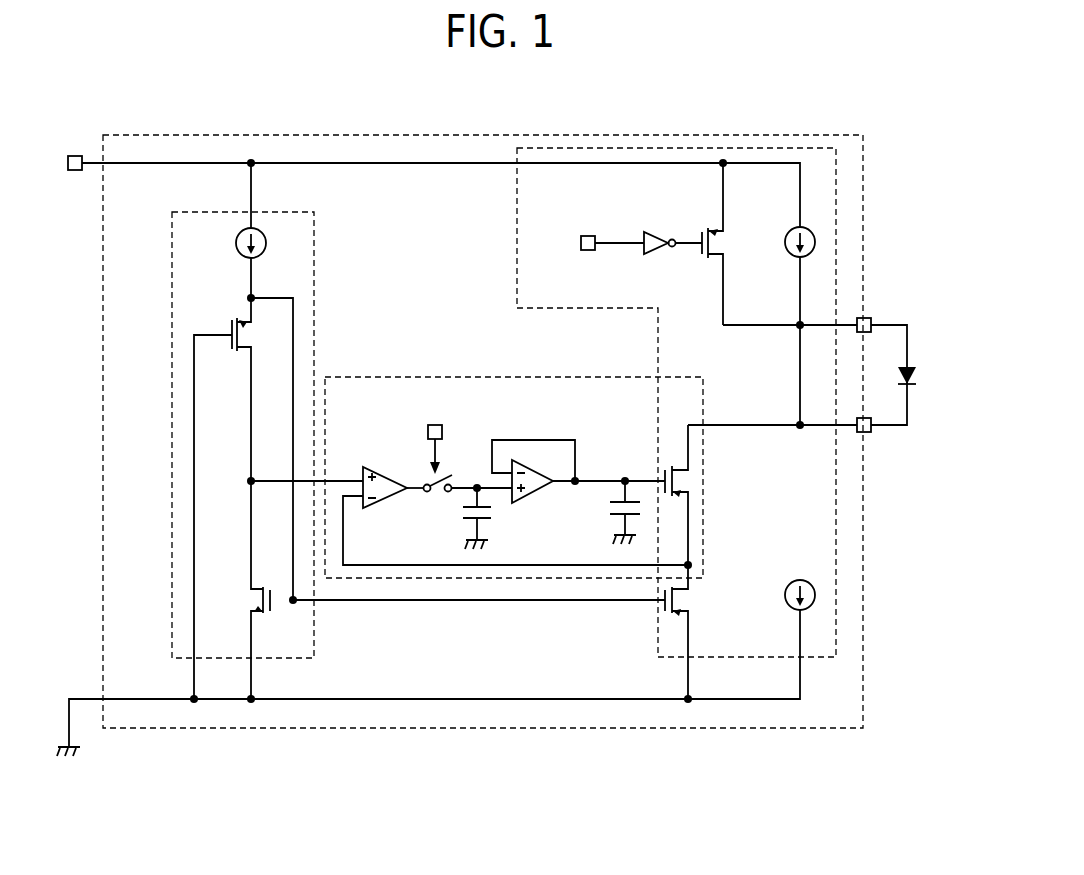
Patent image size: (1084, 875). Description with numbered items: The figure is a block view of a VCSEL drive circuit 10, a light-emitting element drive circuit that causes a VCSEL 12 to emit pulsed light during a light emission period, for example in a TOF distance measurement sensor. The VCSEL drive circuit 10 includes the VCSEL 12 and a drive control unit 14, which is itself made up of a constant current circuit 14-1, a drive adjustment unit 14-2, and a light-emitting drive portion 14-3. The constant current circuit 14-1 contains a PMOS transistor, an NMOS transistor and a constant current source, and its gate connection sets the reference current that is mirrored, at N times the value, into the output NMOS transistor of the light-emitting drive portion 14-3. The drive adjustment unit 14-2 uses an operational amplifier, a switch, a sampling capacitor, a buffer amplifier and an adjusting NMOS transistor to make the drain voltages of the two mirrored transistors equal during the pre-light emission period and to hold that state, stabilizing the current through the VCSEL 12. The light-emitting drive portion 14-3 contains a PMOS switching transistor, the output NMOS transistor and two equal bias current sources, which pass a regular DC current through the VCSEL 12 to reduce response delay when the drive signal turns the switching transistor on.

The VCSEL drive circuit 10 is at (908, 124).
The VCSEL 12 is at (914, 378).
The drive control unit 14 is at (864, 163).
The constant current circuit 14-1 is at (316, 232).
The drive adjustment unit 14-2 is at (369, 377).
The light-emitting drive portion 14-3 is at (516, 272).